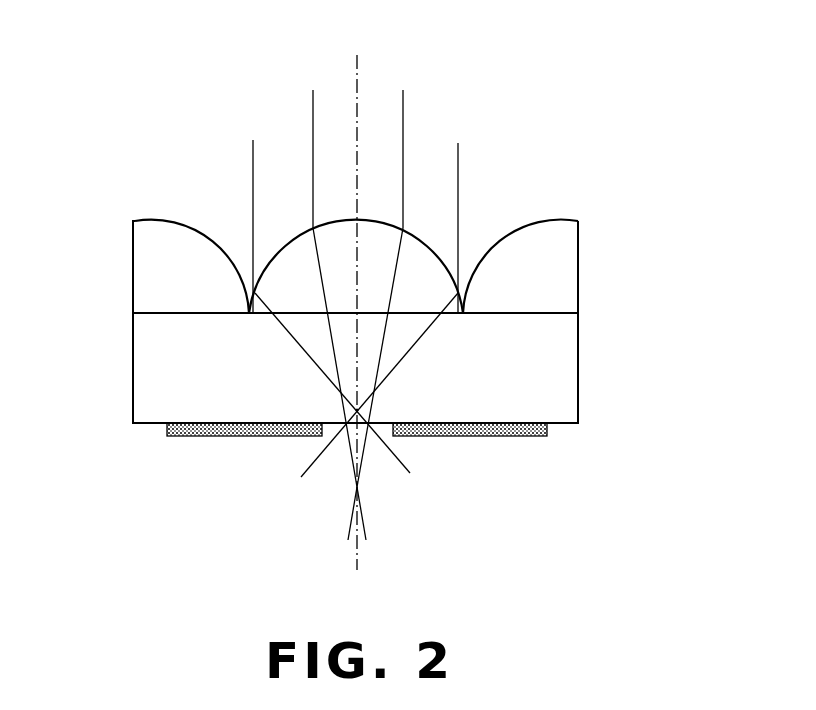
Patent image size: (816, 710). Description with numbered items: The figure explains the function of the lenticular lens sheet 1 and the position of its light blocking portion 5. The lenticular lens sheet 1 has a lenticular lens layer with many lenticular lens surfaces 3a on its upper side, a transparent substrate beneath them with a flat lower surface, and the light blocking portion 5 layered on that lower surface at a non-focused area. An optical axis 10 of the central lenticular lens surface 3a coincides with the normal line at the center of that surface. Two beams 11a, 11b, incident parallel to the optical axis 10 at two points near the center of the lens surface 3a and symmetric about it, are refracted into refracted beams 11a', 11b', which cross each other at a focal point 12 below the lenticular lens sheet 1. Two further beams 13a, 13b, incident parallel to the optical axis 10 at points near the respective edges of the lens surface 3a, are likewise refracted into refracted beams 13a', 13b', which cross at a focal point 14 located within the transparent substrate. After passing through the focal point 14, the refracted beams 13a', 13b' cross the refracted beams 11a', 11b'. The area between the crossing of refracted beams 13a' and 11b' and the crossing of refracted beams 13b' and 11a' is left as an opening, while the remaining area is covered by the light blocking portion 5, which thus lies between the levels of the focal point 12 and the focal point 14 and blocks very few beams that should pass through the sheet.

The lenticular lens sheet 1 is at (120, 193).
The lenticular lens surface 3a is at (328, 222).
The light blocking portion 5 is at (495, 438).
The optical axis 10 is at (354, 78).
The beam 11a is at (450, 150).
The beam 11b is at (267, 150).
The refracted beam 11a' is at (456, 334).
The refracted beam 11b' is at (258, 332).
The focal point 12 is at (352, 488).
The beam 13a is at (504, 215).
The beam 13b is at (205, 215).
The refracted beam 13a' is at (409, 385).
The refracted beam 13b' is at (303, 383).
The focal point 14 is at (360, 412).